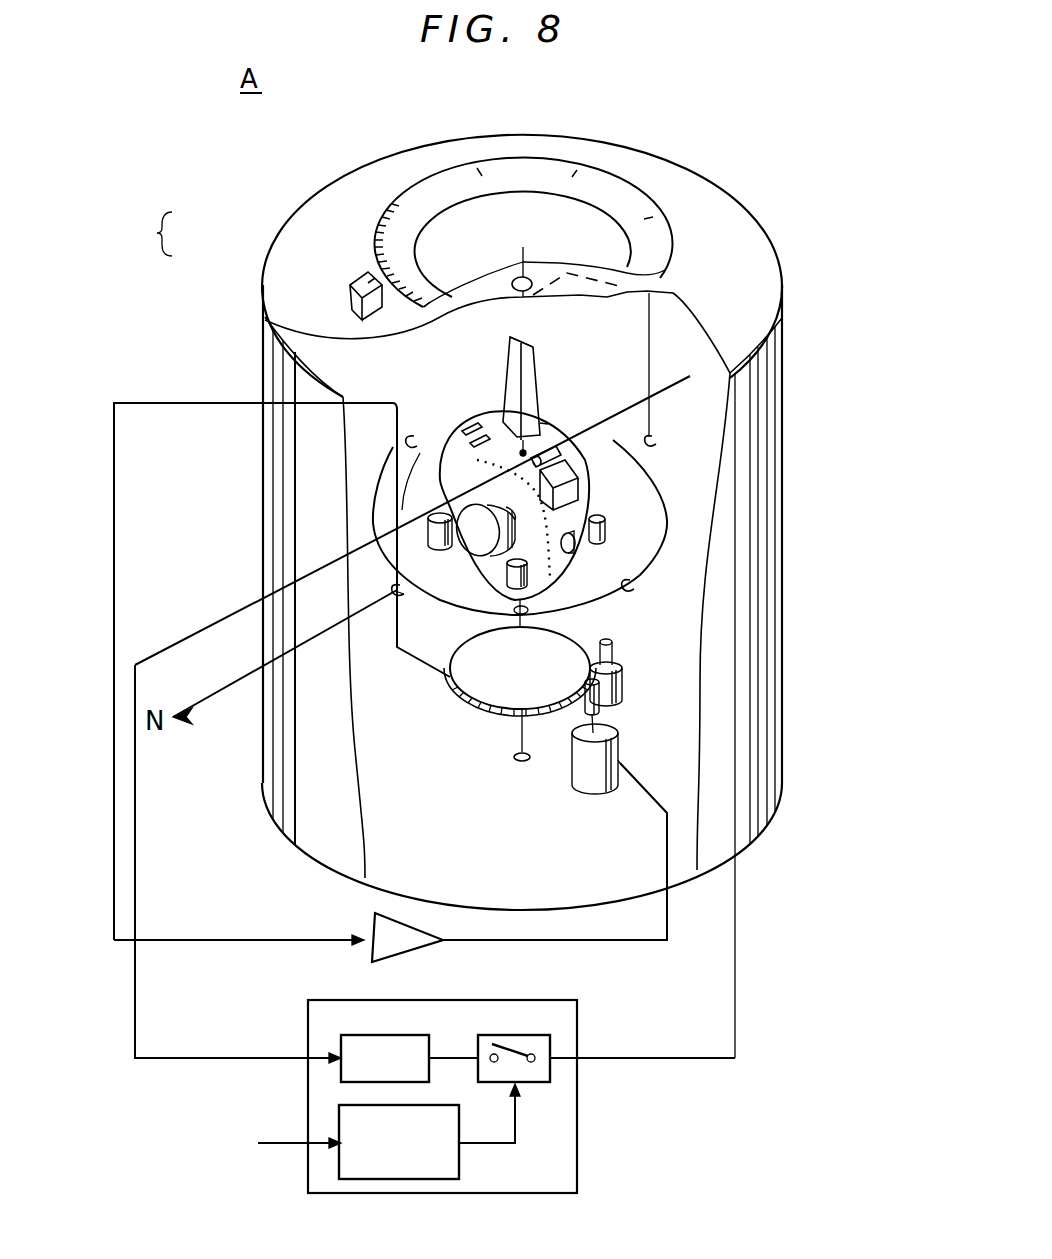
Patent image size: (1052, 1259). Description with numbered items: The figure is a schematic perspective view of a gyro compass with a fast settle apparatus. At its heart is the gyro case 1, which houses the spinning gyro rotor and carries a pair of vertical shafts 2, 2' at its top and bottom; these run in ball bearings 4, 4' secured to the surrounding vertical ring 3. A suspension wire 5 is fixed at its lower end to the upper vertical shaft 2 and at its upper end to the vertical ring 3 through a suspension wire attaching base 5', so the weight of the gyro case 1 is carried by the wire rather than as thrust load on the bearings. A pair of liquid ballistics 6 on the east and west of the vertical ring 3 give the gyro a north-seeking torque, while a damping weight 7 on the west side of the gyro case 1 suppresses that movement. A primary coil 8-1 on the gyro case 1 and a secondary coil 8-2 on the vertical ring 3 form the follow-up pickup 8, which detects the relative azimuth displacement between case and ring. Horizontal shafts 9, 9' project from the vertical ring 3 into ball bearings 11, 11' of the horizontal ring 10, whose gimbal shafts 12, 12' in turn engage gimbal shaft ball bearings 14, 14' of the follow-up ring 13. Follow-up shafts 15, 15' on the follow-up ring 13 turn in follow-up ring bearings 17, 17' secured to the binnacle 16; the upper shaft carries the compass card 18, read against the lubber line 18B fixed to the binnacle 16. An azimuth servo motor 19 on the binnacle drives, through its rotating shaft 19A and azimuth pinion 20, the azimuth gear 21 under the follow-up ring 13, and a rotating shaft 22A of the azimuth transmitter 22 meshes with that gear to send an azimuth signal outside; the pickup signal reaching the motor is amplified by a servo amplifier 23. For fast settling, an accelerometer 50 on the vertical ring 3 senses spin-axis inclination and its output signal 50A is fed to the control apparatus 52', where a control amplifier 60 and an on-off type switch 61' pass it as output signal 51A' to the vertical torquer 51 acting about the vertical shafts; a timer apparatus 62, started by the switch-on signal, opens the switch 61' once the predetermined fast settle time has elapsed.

The gyro case 1 is at (458, 530).
The vertical shaft 2 is at (398, 505).
The vertical shaft 2' is at (495, 692).
The vertical ring 3 is at (578, 486).
The ball bearing 4 is at (550, 427).
The ball bearing 4' is at (476, 633).
The suspension wire 5 is at (662, 350).
The suspension wire attaching base 5' is at (669, 307).
The liquid ballistic 6 is at (385, 535).
The damping weight 7 is at (575, 545).
The follow-up pickup 8 is at (156, 253).
The primary coil 8-1 is at (464, 428).
The secondary coil 8-2 is at (474, 443).
The horizontal shaft 9 is at (335, 483).
The horizontal shaft 9' is at (678, 602).
The horizontal ring 10 is at (605, 522).
The ball bearing 11 is at (384, 431).
The ball bearing 11' is at (663, 595).
The gimbal shaft 12 is at (692, 435).
The gimbal shaft 12' is at (351, 601).
The follow-up ring 13 is at (540, 350).
The gimbal shaft ball bearing 14 is at (671, 421).
The gimbal shaft ball bearing 14' is at (424, 603).
The follow-up shaft 15 is at (519, 204).
The follow-up shaft 15' is at (560, 784).
The binnacle 16 is at (262, 653).
The follow-up ring bearing 17 is at (533, 274).
The follow-up ring bearing 17' is at (528, 798).
The compass card 18 is at (643, 200).
The lubber line 18B is at (360, 285).
The azimuth servo motor 19 is at (618, 785).
The rotating shaft 19A is at (620, 763).
The azimuth pinion 20 is at (600, 700).
The azimuth gear 21 is at (495, 714).
The azimuth transmitter 22 is at (622, 685).
The rotating shaft 22A is at (612, 650).
The servo amplifier 23 is at (420, 945).
The accelerometer 50 is at (540, 423).
The output signal 50A is at (210, 1050).
The vertical torquer 51 is at (730, 373).
The output signal 51A' is at (642, 1053).
The control apparatus 52' is at (479, 1096).
The control amplifier 60 is at (410, 1036).
The on-off type switch 61' is at (518, 1089).
The timer apparatus 62 is at (462, 1168).